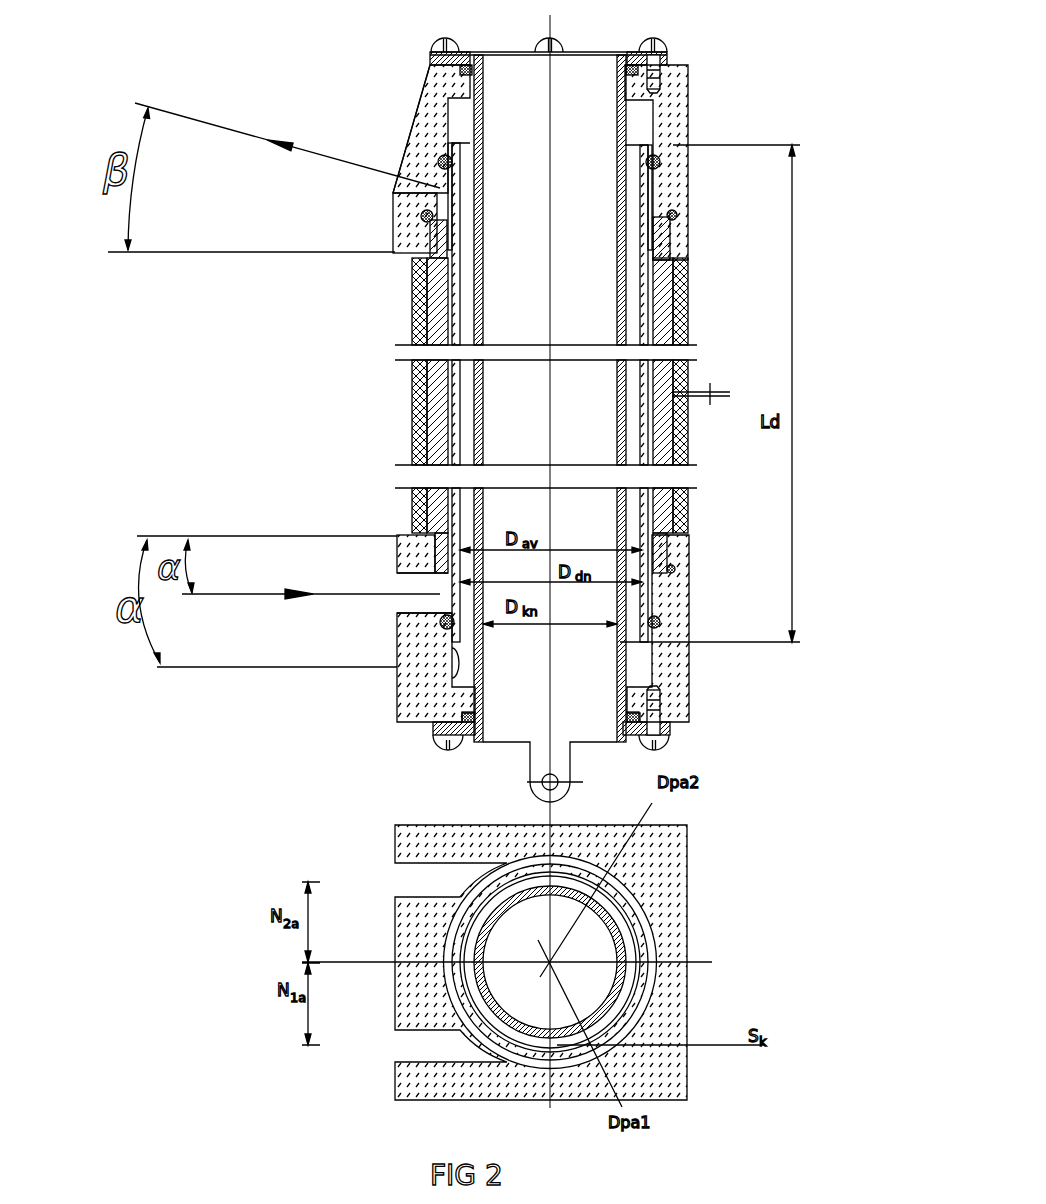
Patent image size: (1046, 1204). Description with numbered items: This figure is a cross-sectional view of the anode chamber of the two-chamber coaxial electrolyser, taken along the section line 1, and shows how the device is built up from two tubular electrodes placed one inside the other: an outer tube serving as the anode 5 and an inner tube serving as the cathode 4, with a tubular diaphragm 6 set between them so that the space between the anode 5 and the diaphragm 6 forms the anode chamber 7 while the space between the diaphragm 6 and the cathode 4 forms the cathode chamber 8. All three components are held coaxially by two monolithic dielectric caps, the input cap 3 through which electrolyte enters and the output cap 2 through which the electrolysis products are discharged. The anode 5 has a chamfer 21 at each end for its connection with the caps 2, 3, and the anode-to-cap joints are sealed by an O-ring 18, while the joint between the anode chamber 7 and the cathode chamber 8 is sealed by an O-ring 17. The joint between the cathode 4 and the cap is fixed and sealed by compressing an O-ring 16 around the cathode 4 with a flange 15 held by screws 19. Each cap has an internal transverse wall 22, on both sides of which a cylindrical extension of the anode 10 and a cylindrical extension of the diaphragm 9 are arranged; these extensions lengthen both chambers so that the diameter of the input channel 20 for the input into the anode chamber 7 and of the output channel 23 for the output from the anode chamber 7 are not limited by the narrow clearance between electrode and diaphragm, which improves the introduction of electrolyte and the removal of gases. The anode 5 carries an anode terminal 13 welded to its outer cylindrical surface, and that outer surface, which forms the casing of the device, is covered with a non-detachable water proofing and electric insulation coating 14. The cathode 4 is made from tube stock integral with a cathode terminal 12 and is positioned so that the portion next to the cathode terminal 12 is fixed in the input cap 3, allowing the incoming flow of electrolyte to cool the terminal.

The section line 1 is at (237, 1045).
The output cap 2 is at (428, 70).
The input cap 3 is at (685, 553).
The cathode 4 is at (598, 108).
The anode 5 is at (662, 297).
The tubular diaphragm 6 is at (455, 290).
The anode chamber 7 is at (650, 240).
The cathode chamber 8 is at (822, 145).
The cylindrical extension of the diaphragm 9 is at (418, 110).
The cylindrical extension of the anode 10 is at (452, 198).
The cathode terminal 12 is at (565, 749).
The anode terminal 13 is at (672, 394).
The water proofing and electric insulation coating 14 is at (685, 330).
The flange 15 is at (432, 56).
The O-ring 16 is at (688, 73).
The O-ring 17 is at (438, 167).
The O-ring 18 is at (428, 218).
The screws 19 is at (667, 44).
The input channel 20 is at (440, 584).
The chamfer 21 is at (668, 220).
The internal transverse wall 22 is at (657, 172).
The output channel 23 is at (448, 192).